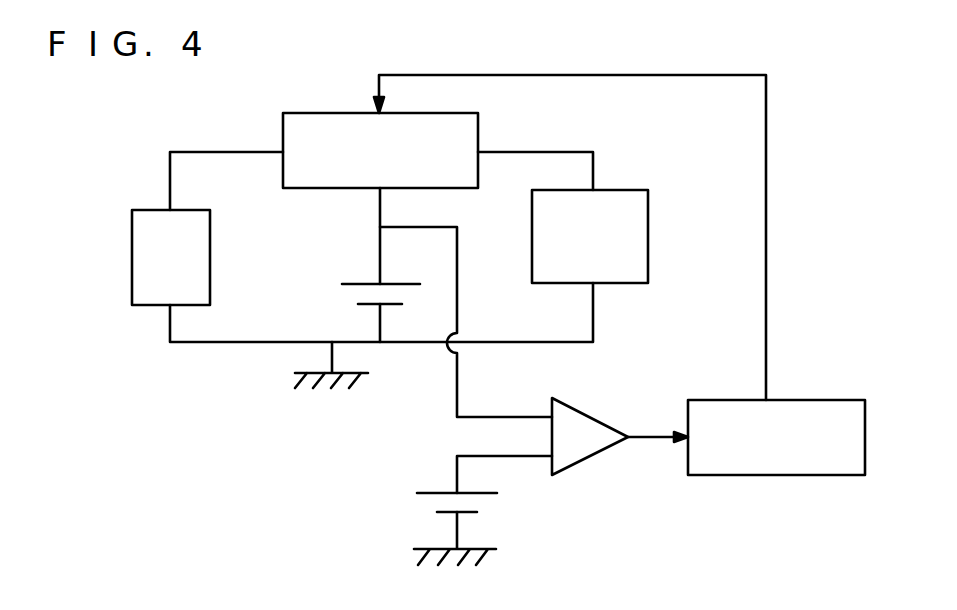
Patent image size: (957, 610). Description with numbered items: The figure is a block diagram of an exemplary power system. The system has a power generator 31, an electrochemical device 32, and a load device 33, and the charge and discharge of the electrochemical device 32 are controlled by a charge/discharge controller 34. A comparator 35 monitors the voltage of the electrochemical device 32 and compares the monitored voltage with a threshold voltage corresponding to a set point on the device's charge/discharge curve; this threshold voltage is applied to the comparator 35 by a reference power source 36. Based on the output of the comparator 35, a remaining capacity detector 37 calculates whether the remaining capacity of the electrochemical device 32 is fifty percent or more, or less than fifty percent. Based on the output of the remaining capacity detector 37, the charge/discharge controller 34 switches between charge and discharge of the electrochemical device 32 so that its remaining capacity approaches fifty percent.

The power generator 31 is at (198, 222).
The electrochemical device 32 is at (352, 296).
The load device 33 is at (650, 200).
The charge/discharge controller 34 is at (332, 126).
The comparator 35 is at (590, 427).
The reference power source 36 is at (432, 503).
The remaining capacity detector 37 is at (724, 412).